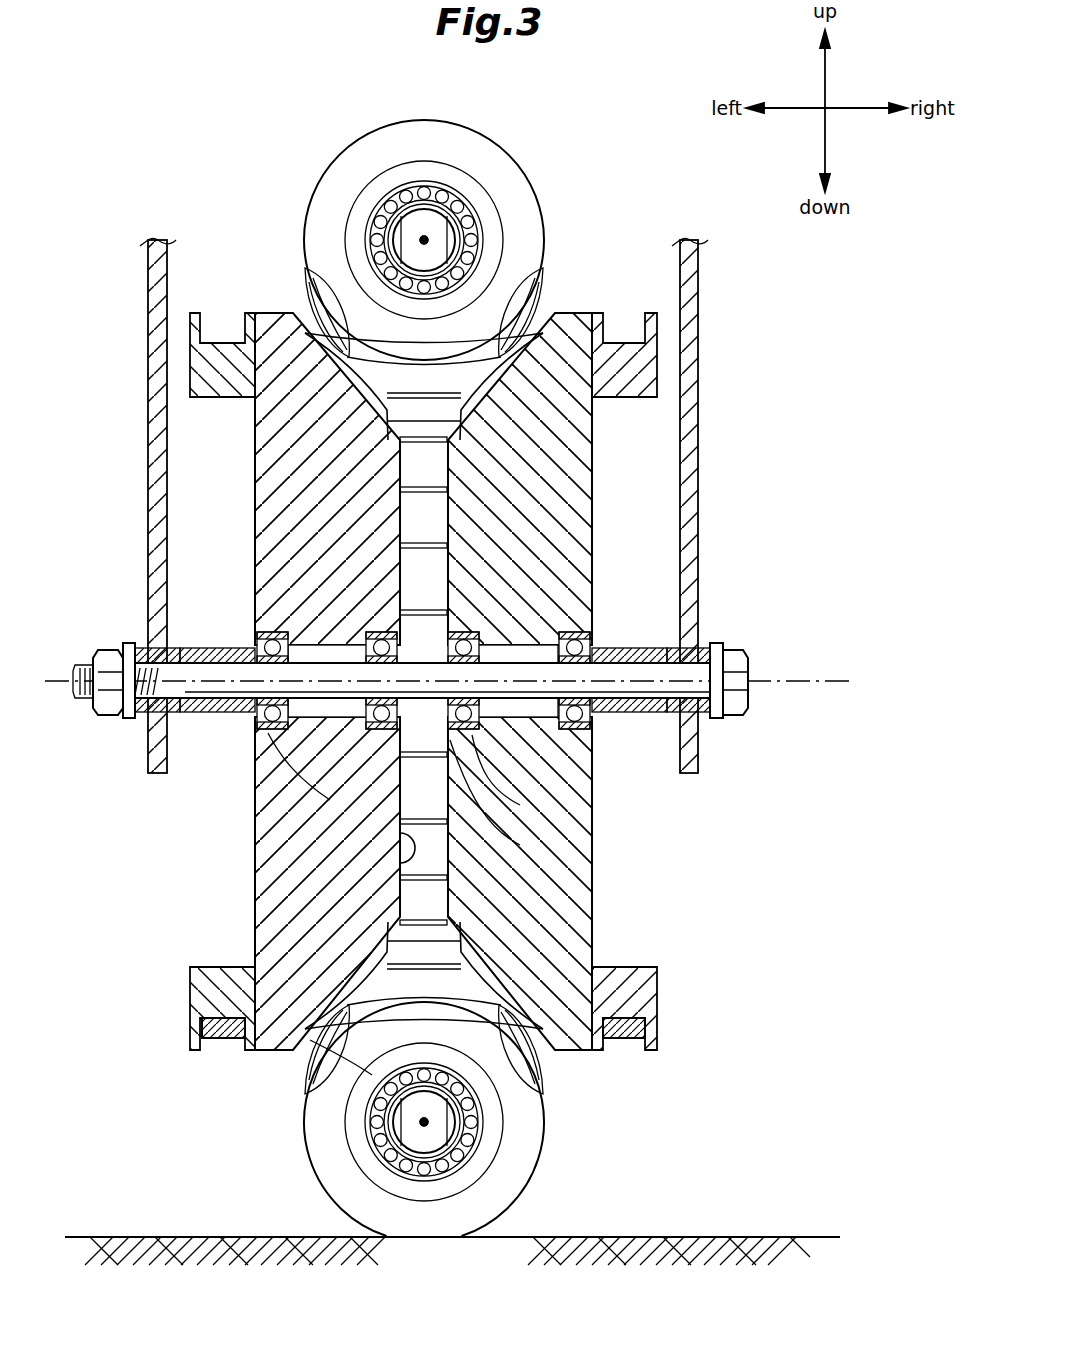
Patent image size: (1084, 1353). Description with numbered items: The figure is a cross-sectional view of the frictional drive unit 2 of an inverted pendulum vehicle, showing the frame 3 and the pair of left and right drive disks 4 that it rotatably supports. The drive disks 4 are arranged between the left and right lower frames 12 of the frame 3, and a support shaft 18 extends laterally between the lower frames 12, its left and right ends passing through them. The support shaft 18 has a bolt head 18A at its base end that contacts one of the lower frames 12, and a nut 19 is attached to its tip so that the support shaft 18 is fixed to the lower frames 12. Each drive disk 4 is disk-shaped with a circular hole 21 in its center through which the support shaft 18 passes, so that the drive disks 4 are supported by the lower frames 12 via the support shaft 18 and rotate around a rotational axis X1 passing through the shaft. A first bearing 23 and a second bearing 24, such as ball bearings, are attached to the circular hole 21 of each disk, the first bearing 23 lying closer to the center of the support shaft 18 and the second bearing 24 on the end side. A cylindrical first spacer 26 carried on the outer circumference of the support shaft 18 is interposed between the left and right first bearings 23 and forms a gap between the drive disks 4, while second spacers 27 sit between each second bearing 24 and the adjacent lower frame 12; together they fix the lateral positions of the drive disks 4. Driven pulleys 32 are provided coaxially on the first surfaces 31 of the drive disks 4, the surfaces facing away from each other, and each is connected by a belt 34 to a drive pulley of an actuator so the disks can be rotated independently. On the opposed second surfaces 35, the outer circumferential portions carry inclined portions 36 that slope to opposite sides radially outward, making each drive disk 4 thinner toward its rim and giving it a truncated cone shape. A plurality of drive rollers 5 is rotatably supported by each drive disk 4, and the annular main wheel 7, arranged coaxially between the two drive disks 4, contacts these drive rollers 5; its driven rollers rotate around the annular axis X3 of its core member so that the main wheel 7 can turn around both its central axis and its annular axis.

The frictional drive unit 2 is at (273, 106).
The frame 3 is at (698, 349).
The drive disks 4 is at (257, 505).
The drive rollers 5 is at (345, 355).
The main wheel 7 is at (362, 137).
The lower frames 12 is at (150, 348).
The support shaft 18 is at (630, 690).
The bolt head 18A is at (738, 655).
The nut 19 is at (110, 708).
The circular hole 21 is at (290, 638).
The first bearing 23 is at (328, 740).
The second bearing 24 is at (268, 730).
The first spacer 26 is at (505, 835).
The second spacers 27 is at (198, 708).
The first surfaces 31 is at (254, 868).
The driven pulleys 32 is at (190, 1000).
The belt 34 is at (221, 1040).
The second surfaces 35 is at (405, 878).
The inclined portions 36 is at (330, 1050).
The rotational axis X1 is at (464, 690).
The annular axis X3 is at (424, 238).